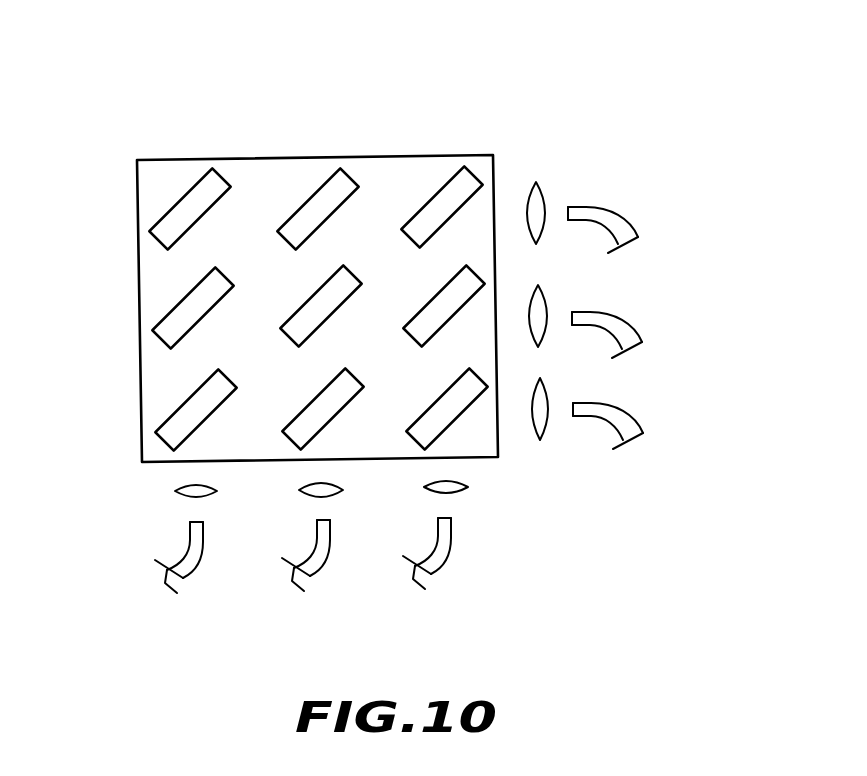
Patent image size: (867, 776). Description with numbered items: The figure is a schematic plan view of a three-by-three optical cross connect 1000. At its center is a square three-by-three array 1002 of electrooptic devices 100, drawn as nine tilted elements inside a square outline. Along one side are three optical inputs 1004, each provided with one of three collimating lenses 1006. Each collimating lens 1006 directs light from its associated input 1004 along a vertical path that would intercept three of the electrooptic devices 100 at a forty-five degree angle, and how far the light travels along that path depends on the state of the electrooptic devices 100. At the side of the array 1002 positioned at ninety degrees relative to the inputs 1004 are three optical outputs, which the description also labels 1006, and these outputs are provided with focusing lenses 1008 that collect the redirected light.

The three-by-three optical cross connect 1000 is at (133, 119).
The square three-by-three array 1002 is at (435, 155).
The electrooptic device 100 is at (430, 197).
The optical input 1004 is at (170, 568).
The collimating lens 1006 is at (612, 212).
The focusing lens 1008 is at (527, 223).